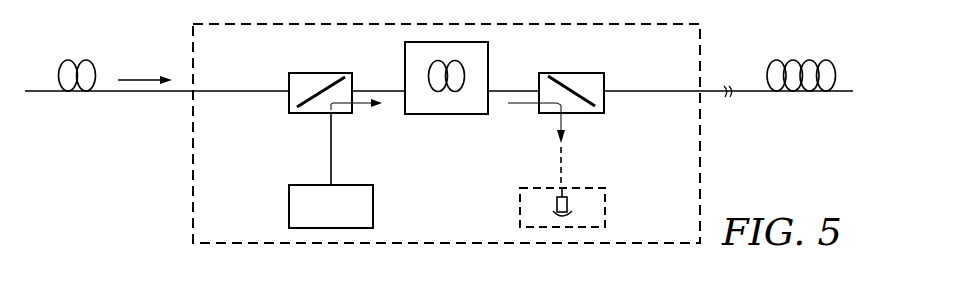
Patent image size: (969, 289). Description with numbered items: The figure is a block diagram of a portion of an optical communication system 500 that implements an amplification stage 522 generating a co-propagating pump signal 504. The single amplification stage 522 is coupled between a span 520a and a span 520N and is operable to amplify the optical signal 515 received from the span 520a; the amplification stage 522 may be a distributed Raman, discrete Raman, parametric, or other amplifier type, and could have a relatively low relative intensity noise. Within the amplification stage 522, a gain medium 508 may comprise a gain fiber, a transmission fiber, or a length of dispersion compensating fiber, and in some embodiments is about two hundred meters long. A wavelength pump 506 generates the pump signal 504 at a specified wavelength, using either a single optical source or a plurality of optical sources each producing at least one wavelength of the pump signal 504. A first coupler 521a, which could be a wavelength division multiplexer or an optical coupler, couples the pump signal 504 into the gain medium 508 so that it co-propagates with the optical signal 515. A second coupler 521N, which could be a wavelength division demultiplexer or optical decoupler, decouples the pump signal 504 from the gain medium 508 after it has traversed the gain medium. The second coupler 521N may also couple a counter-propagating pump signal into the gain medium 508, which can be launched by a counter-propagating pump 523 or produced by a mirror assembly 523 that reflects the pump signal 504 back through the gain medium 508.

The optical communication system 500 is at (108, 190).
The optical signal 515 is at (147, 78).
The span 520a is at (68, 59).
The span 520N is at (810, 60).
The first coupler 521a is at (289, 79).
The second coupler 521N is at (605, 81).
The pump signal 504 is at (325, 155).
The wavelength pump 506 is at (282, 210).
The gain medium 508 is at (425, 73).
The amplification stage 522 is at (465, 218).
The counter-propagating pump 523 is at (608, 208).